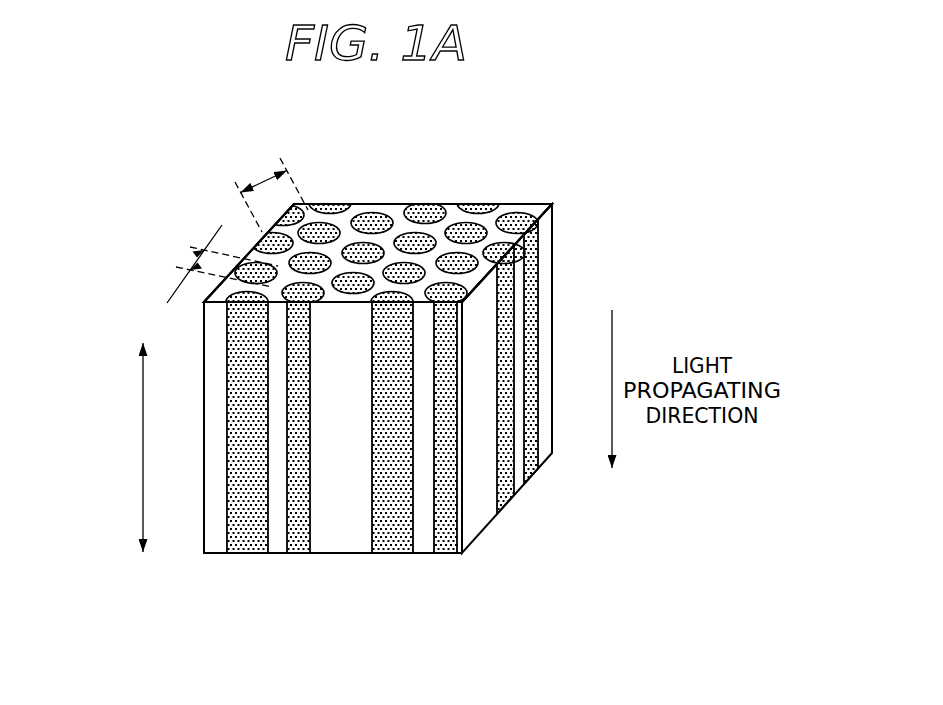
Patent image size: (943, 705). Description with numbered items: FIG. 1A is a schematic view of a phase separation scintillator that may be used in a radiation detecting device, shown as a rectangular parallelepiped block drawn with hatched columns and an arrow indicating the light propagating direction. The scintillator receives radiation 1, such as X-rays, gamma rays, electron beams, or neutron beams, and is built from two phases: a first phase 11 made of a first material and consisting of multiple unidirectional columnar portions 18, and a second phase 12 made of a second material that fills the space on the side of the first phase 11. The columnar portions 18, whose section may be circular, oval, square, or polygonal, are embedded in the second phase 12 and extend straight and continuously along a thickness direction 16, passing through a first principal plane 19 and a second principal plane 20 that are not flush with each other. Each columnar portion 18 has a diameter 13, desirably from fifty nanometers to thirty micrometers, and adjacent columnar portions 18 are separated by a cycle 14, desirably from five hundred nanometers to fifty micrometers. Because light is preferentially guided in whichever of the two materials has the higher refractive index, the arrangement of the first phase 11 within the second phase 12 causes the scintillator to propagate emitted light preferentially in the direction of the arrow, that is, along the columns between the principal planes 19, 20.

The radiation 1 is at (134, 303).
The first phase 11 is at (371, 219).
The second phase 12 is at (428, 222).
The diameter 13 is at (198, 255).
The cycle 14 is at (270, 176).
The thickness direction 16 is at (142, 455).
The columnar portions 18 is at (395, 553).
The first principal plane 19 is at (322, 569).
The second principal plane 20 is at (336, 186).